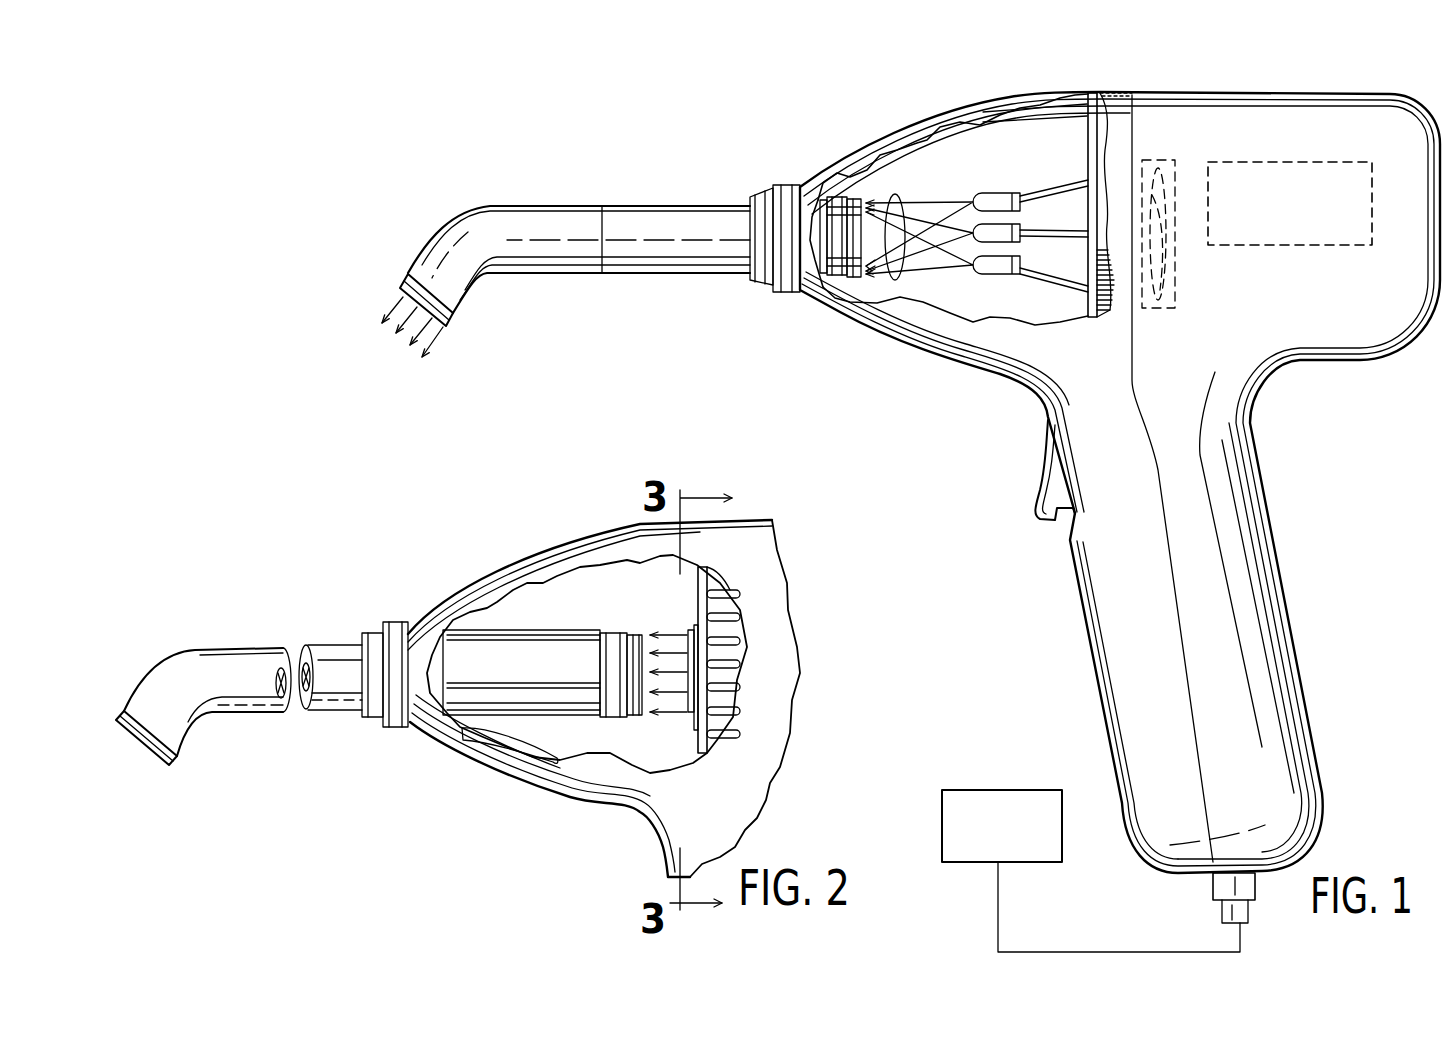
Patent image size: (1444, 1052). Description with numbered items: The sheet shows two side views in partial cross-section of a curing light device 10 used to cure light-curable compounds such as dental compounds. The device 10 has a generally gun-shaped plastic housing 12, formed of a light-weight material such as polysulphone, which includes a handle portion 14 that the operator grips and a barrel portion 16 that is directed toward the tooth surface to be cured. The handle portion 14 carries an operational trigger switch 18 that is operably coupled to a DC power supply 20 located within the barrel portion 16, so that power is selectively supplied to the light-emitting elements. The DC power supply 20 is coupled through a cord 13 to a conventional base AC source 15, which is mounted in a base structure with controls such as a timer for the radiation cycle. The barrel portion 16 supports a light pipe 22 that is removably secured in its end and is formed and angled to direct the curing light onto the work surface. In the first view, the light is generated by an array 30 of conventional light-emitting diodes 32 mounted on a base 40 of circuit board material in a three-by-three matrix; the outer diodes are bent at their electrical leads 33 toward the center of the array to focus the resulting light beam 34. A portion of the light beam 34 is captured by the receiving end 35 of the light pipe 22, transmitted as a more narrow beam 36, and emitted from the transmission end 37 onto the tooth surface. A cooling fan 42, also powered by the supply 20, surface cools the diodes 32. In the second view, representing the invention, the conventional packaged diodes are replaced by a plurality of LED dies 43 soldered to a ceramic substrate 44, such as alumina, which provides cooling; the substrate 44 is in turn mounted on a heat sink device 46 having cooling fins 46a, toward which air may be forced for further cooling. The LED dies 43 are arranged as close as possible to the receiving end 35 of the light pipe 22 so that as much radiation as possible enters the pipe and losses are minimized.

In FIG. 1, the curing light device 10 is at (1030, 587).
In FIG. 1, the housing 12 is at (1272, 515).
In FIG. 2, the housing 12 is at (568, 537).
In FIG. 1, the cord 13 is at (1220, 885).
In FIG. 1, the handle portion 14 is at (1150, 677).
In FIG. 1, the base AC source 15 is at (997, 790).
In FIG. 1, the barrel portion 16 is at (1192, 102).
In FIG. 2, the barrel portion 16 is at (753, 527).
In FIG. 1, the trigger switch 18 is at (1045, 473).
In FIG. 1, the DC power supply 20 is at (1297, 162).
In FIG. 1, the light pipe 22 is at (621, 207).
In FIG. 2, the light pipe 22 is at (232, 655).
In FIG. 1, the array of light-emitting diodes 30 is at (985, 193).
In FIG. 1, the light-emitting diodes 32 is at (988, 262).
In FIG. 1, the electrical leads 33 is at (1048, 190).
In FIG. 1, the light beam 34 is at (930, 180).
In FIG. 1, the receiving end 35 is at (840, 284).
In FIG. 2, the receiving end 35 is at (624, 635).
In FIG. 1, the narrow beam 36 is at (400, 298).
In FIG. 1, the transmission end 37 is at (466, 310).
In FIG. 2, the transmission end 37 is at (190, 740).
In FIG. 1, the base 40 is at (1098, 146).
In FIG. 1, the cooling fan 42 is at (1176, 283).
In FIG. 2, the LED dies 43 is at (690, 662).
In FIG. 2, the ceramic substrate 44 is at (690, 722).
In FIG. 2, the heat sink device 46 is at (714, 580).
In FIG. 2, the cooling fins 46a is at (740, 660).